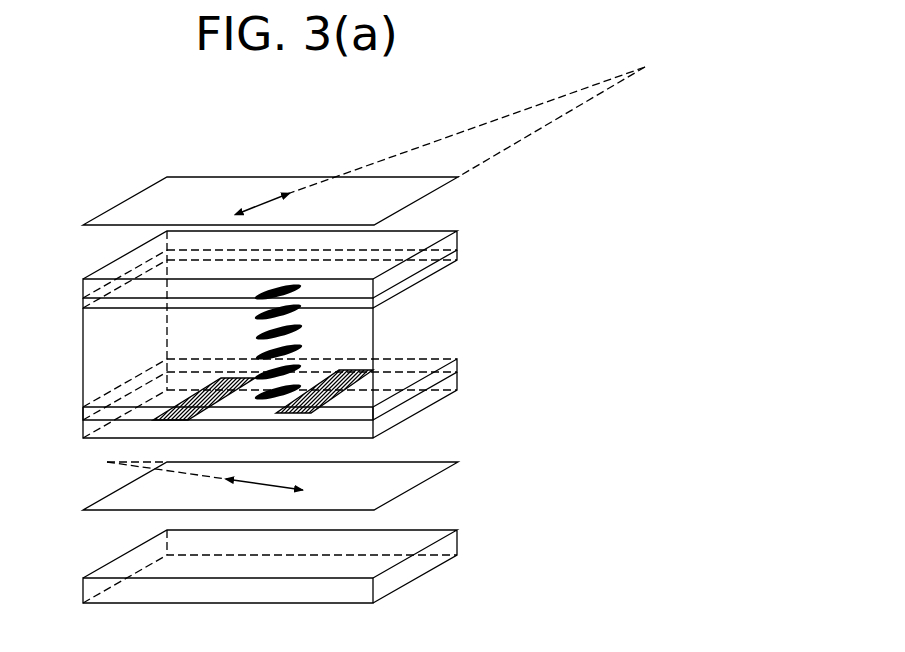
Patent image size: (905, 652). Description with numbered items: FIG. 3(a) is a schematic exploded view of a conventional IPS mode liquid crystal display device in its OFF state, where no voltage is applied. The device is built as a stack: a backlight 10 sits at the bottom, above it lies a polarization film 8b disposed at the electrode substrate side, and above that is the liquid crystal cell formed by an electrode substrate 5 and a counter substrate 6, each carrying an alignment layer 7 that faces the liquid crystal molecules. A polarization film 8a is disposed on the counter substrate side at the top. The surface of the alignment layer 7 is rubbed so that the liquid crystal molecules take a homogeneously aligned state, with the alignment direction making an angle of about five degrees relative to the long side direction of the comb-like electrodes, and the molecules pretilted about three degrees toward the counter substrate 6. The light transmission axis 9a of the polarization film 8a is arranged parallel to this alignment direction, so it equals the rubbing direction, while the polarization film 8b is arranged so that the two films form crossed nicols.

The electrode substrate 5 is at (452, 383).
The counter substrate 6 is at (453, 242).
The alignment layer 7 is at (452, 256).
The polarization film 8a is at (195, 177).
The polarization film 8b is at (402, 477).
The light transmission axis 9a is at (273, 200).
The backlight 10 is at (452, 545).